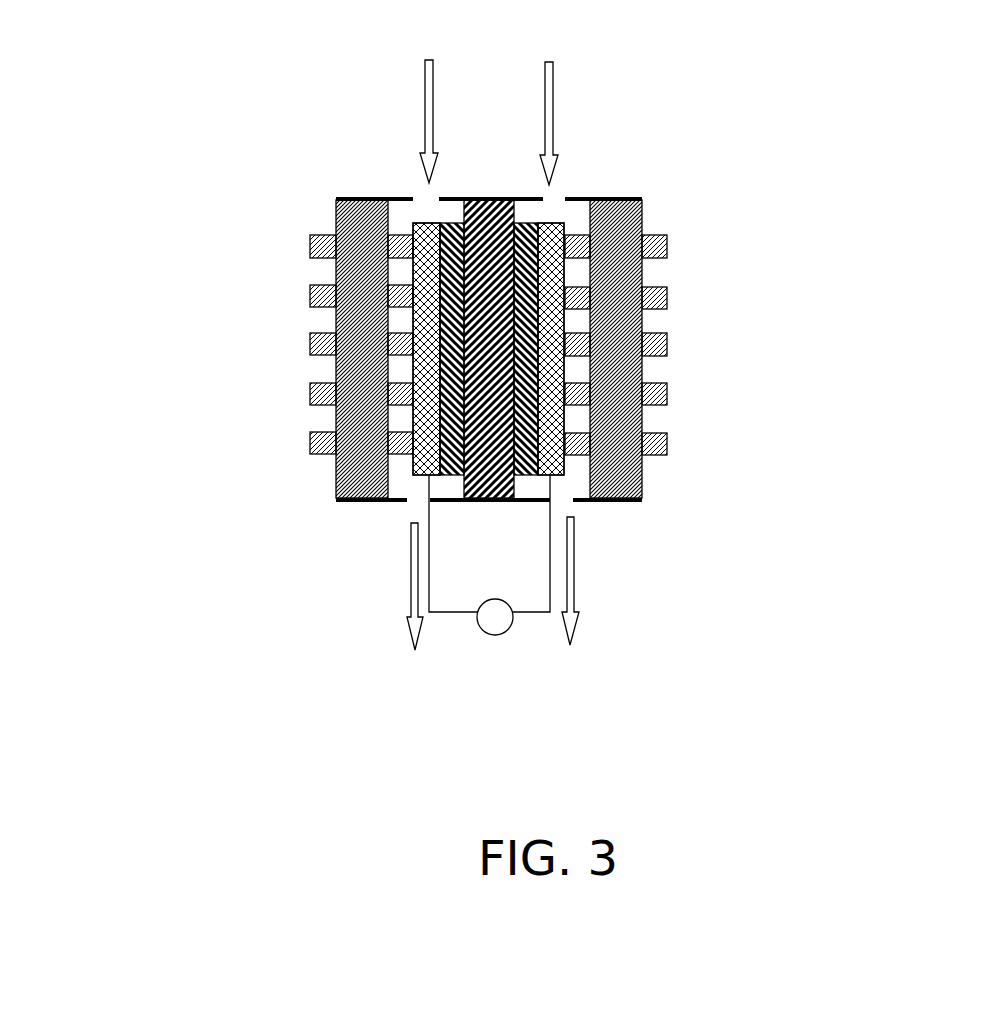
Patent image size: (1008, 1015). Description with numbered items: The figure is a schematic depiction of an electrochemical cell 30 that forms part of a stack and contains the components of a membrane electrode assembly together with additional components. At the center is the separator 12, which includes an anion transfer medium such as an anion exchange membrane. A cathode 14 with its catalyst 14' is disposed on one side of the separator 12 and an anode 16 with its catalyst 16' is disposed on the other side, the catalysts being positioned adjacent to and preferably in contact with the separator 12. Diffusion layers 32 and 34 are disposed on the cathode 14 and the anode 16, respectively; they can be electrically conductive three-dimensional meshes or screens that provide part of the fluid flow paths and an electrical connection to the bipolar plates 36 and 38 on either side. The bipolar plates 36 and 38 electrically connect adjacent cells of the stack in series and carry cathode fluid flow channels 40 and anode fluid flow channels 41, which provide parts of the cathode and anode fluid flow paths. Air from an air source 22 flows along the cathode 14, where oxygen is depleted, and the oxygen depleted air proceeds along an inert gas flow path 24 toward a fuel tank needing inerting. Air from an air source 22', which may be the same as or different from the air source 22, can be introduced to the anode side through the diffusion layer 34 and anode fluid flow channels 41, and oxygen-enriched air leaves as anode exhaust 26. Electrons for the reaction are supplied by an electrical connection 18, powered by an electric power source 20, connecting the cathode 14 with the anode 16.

The separator 12 is at (488, 200).
The cathode 14 is at (453, 399).
The catalyst 14' is at (321, 349).
The anode 16 is at (533, 399).
The catalyst 16' is at (661, 349).
The electrical connection 18 is at (450, 613).
The electric power source 20 is at (500, 637).
The air source 22 is at (355, 104).
The air source 22' is at (612, 123).
The inert gas flow path 24 is at (410, 583).
The anode exhaust 26 is at (577, 567).
The electrochemical cell 30 is at (787, 97).
The diffusion layer 32 is at (428, 222).
The diffusion layer 34 is at (546, 222).
The bipolar plate 36 is at (336, 215).
The bipolar plate 38 is at (642, 213).
The cathode fluid flow channels 40 is at (400, 318).
The anode fluid flow channels 41 is at (327, 413).